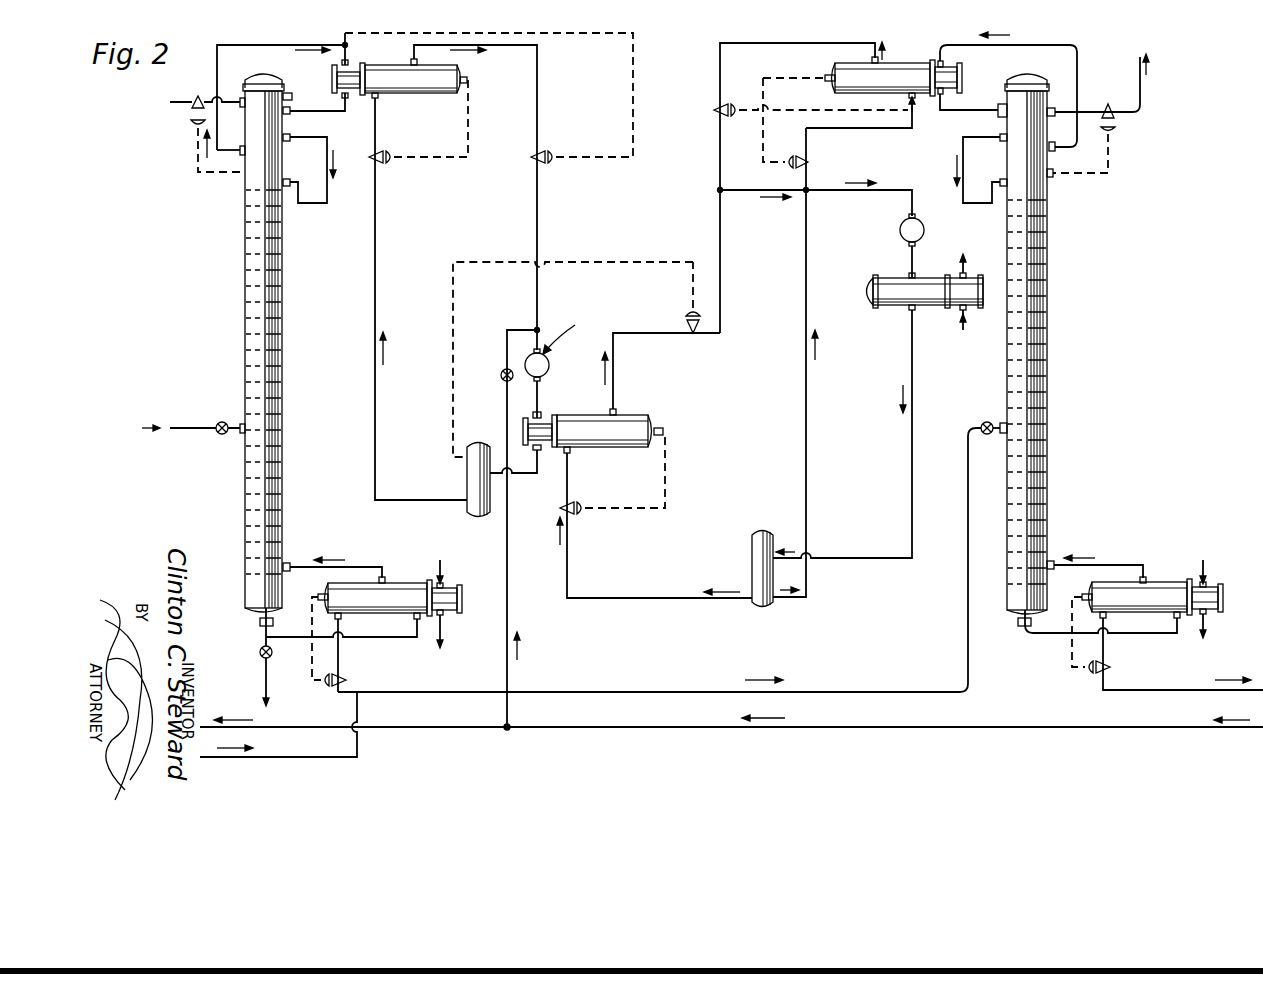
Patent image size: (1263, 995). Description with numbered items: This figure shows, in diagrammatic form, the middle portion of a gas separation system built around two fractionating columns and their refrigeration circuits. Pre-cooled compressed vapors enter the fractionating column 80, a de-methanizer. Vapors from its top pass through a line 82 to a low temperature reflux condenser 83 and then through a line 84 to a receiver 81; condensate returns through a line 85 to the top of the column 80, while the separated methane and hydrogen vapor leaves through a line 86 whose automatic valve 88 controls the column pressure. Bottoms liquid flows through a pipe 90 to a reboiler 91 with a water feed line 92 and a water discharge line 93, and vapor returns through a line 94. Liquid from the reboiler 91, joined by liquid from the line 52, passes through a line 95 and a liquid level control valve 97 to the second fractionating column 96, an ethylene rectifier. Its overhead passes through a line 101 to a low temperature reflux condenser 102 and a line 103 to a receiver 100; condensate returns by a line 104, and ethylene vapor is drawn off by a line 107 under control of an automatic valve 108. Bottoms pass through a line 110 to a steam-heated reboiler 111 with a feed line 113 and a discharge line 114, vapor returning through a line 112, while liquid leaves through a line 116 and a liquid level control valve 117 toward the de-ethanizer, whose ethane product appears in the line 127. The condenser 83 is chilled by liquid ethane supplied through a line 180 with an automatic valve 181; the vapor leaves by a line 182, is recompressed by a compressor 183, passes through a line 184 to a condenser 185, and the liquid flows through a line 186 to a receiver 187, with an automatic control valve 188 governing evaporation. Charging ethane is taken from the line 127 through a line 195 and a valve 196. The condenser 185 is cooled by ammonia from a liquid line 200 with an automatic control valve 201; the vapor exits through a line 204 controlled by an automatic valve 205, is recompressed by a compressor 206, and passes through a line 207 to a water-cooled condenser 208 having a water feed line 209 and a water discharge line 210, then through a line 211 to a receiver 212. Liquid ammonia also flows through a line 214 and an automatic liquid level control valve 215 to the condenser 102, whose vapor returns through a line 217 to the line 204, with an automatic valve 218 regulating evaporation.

The line 52 is at (360, 751).
The fractionating column 80 is at (283, 418).
The receiver 81 is at (283, 97).
The line 82 is at (216, 63).
The low temperature reflux condenser 83 is at (375, 68).
The line 84 is at (297, 114).
The line 85 is at (292, 143).
The line 86 is at (178, 106).
The automatic valve 88 is at (198, 95).
The pipe 90 is at (292, 642).
The reboiler 91 is at (405, 588).
The water feed line 92 is at (446, 565).
The water discharge line 93 is at (447, 633).
The line 94 is at (366, 565).
The line 95 is at (835, 690).
The second fractionating column 96 is at (1048, 405).
The liquid level control valve 97 is at (323, 686).
The receiver 100 is at (1049, 88).
The line 101 is at (1078, 67).
The low temperature reflux condenser 102 is at (897, 70).
The line 103 is at (952, 120).
The line 104 is at (966, 167).
The line 107 is at (1142, 95).
The automatic valve 108 is at (1118, 133).
The line 110 is at (1030, 643).
The reboiler 111 is at (1158, 582).
The line 112 is at (1102, 563).
The feed line 113 is at (1205, 563).
The line 114 is at (1208, 622).
The line 116 is at (1160, 690).
The liquid level control valve 117 is at (1112, 665).
The line 127 is at (836, 732).
The line 180 is at (378, 262).
The automatic valve 181 is at (392, 153).
The line 182 is at (540, 96).
The compressor 183 is at (546, 360).
The line 184 is at (542, 395).
The condenser 185 is at (560, 422).
The line 186 is at (504, 468).
The receiver 187 is at (467, 478).
The automatic control valve 188 is at (553, 168).
The line 195 is at (510, 568).
The valve 196 is at (502, 372).
The liquid line 200 is at (570, 468).
The automatic control valve 201 is at (590, 514).
The line 204 is at (721, 336).
The automatic valve 205 is at (686, 319).
The compressor 206 is at (925, 225).
The line 207 is at (918, 265).
The condenser 208 is at (893, 306).
The water feed line 209 is at (965, 323).
The water discharge line 210 is at (968, 262).
The line 211 is at (915, 400).
The receiver 212 is at (748, 532).
The line 214 is at (805, 433).
The automatic liquid level control valve 215 is at (790, 155).
The line 217 is at (740, 44).
The automatic valve 218 is at (750, 120).